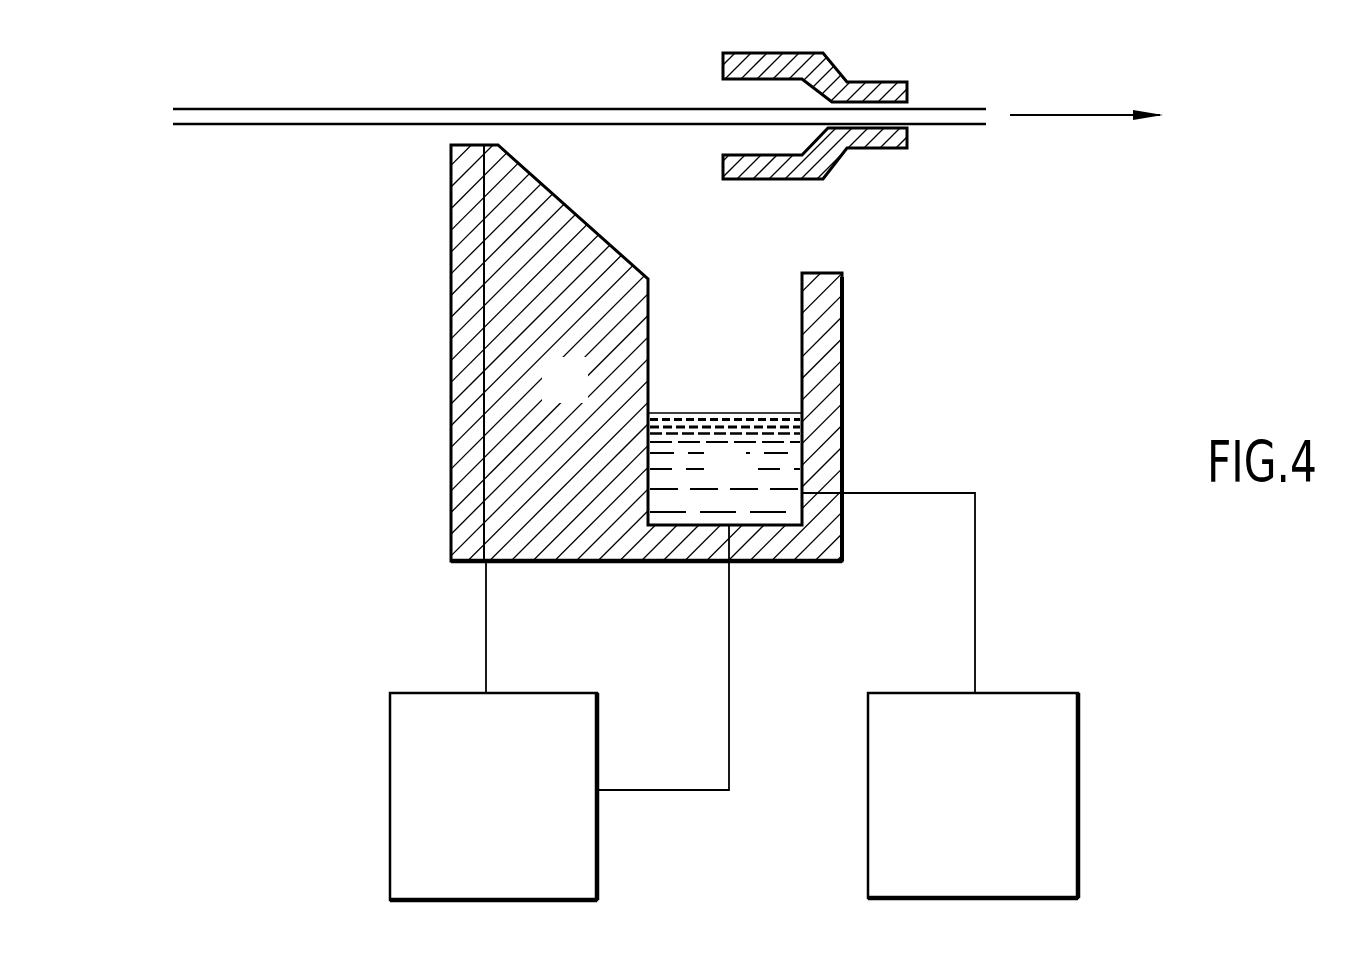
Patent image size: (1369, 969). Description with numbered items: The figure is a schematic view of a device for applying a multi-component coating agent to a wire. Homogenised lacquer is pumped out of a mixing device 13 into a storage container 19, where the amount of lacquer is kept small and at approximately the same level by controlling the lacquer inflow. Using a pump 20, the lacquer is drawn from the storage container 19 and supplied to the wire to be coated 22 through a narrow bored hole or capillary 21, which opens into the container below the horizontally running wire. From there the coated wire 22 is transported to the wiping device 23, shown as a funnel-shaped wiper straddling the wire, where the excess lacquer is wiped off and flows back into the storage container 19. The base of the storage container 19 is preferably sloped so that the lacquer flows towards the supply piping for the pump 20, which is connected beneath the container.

The mixing device 13 is at (993, 820).
The storage container 19 is at (742, 479).
The pump 20 is at (507, 820).
The narrow bored hole or capillary 21 is at (582, 397).
The wire to be coated 22 is at (237, 110).
The wiping device 23 is at (872, 80).